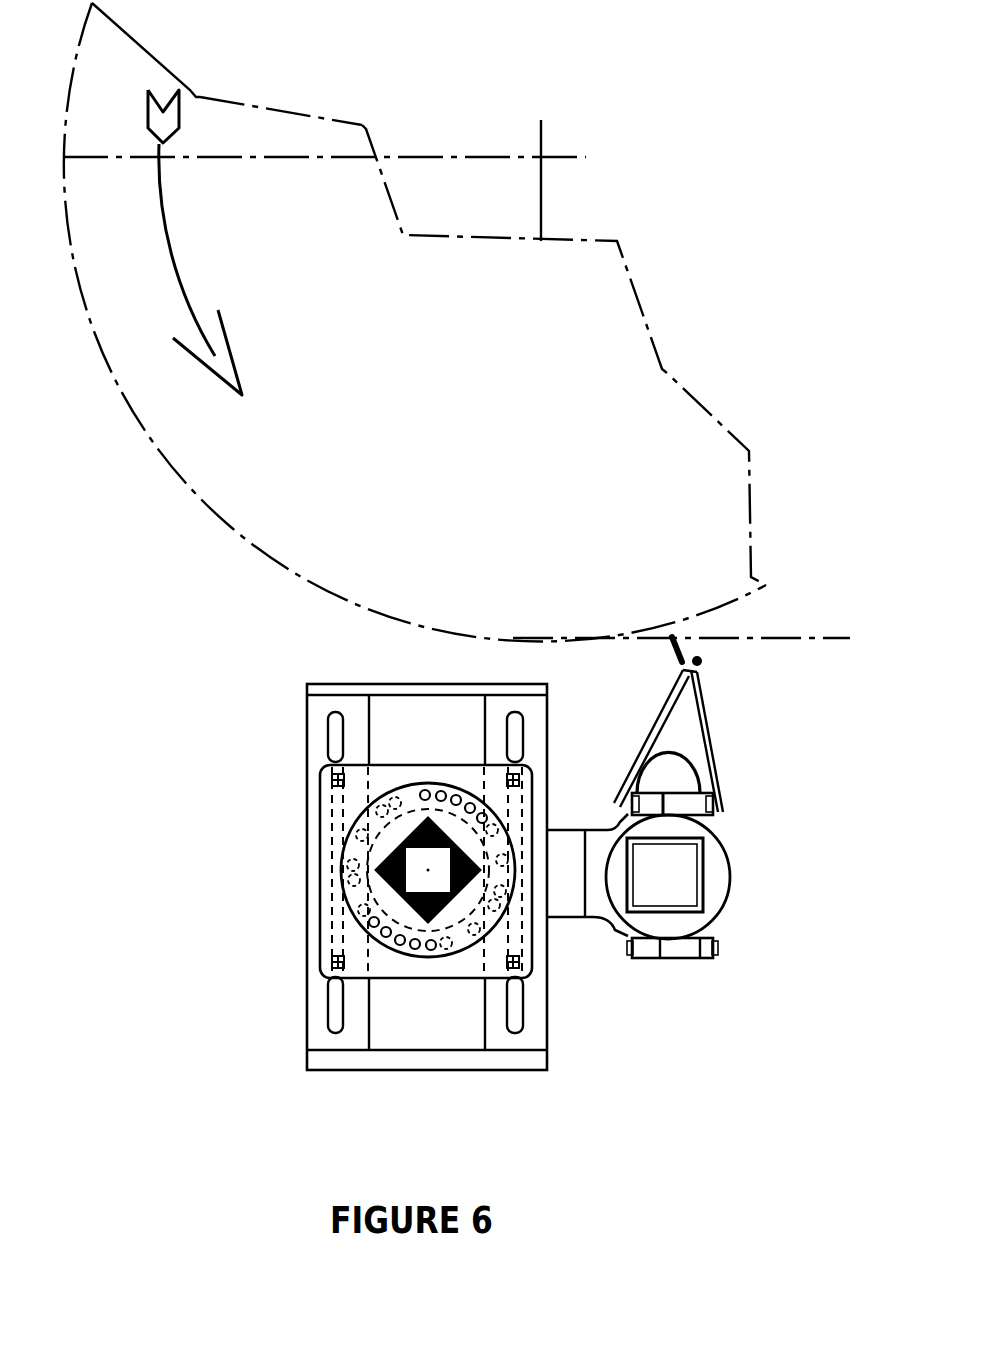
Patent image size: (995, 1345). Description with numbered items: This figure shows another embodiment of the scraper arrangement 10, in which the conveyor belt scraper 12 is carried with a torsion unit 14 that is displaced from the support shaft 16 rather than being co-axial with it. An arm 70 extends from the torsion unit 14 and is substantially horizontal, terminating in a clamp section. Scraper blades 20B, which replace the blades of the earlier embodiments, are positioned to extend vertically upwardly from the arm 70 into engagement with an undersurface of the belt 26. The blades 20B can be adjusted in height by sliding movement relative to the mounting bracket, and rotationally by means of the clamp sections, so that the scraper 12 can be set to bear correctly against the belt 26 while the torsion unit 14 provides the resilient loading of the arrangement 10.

The scraper arrangement 10 is at (667, 1064).
The conveyor belt scraper 12 is at (745, 691).
The torsion unit 14 is at (232, 863).
The support shaft 16 is at (708, 884).
The scraper blades 20B is at (650, 717).
The belt 26 is at (198, 495).
The arm 70 is at (570, 905).